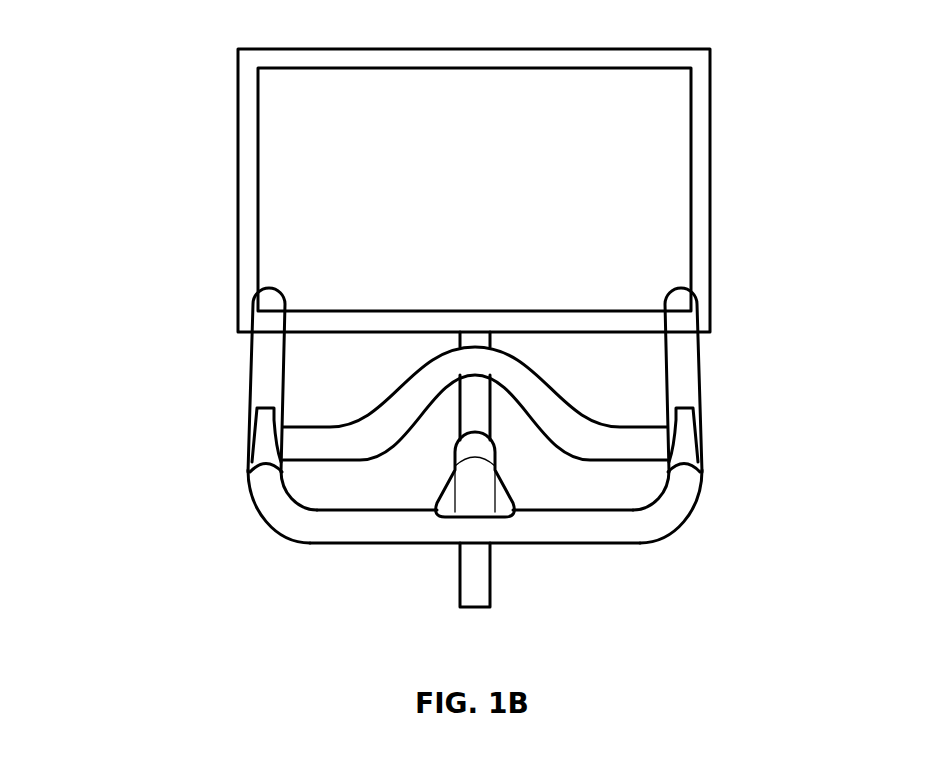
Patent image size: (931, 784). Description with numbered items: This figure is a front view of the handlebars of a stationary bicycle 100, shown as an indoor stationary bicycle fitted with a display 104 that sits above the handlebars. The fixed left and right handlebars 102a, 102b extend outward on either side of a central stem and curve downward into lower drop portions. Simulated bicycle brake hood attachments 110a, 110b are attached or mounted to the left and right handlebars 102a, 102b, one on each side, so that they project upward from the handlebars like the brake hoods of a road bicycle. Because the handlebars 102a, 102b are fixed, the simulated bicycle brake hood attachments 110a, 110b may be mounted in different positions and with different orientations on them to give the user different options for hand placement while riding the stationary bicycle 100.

The stationary bicycle 100 is at (184, 149).
The display 104 is at (708, 152).
The left handlebar 102a is at (250, 505).
The right handlebar 102b is at (692, 510).
The simulated bicycle brake hood attachment 110a is at (255, 463).
The simulated bicycle brake hood attachment 110b is at (688, 458).